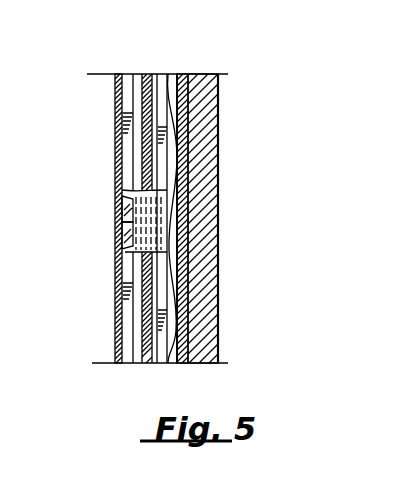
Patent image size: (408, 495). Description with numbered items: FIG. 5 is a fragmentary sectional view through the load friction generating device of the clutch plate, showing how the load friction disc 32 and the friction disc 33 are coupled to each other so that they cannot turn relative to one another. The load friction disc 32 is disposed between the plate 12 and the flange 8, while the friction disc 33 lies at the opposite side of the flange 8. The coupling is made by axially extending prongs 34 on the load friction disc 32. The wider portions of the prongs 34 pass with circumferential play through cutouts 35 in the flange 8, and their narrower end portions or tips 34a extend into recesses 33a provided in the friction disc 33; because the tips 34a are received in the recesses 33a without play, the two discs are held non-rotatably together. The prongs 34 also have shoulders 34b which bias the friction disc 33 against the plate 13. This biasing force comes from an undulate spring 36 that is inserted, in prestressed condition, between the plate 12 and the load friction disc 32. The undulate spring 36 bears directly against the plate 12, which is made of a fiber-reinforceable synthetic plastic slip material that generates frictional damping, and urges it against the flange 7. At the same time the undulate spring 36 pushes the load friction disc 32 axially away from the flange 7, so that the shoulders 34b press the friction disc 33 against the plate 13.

The flange 7 is at (210, 110).
The flange 8 is at (148, 78).
The plate 12 is at (181, 82).
The plate 13 is at (118, 347).
The load friction disc 32 is at (168, 74).
The friction disc 33 is at (127, 307).
The recesses 33a is at (126, 211).
The prongs 34 is at (150, 196).
The tips 34a is at (122, 240).
The shoulders 34b is at (124, 262).
The cutouts 35 is at (129, 186).
The undulate spring 36 is at (158, 252).